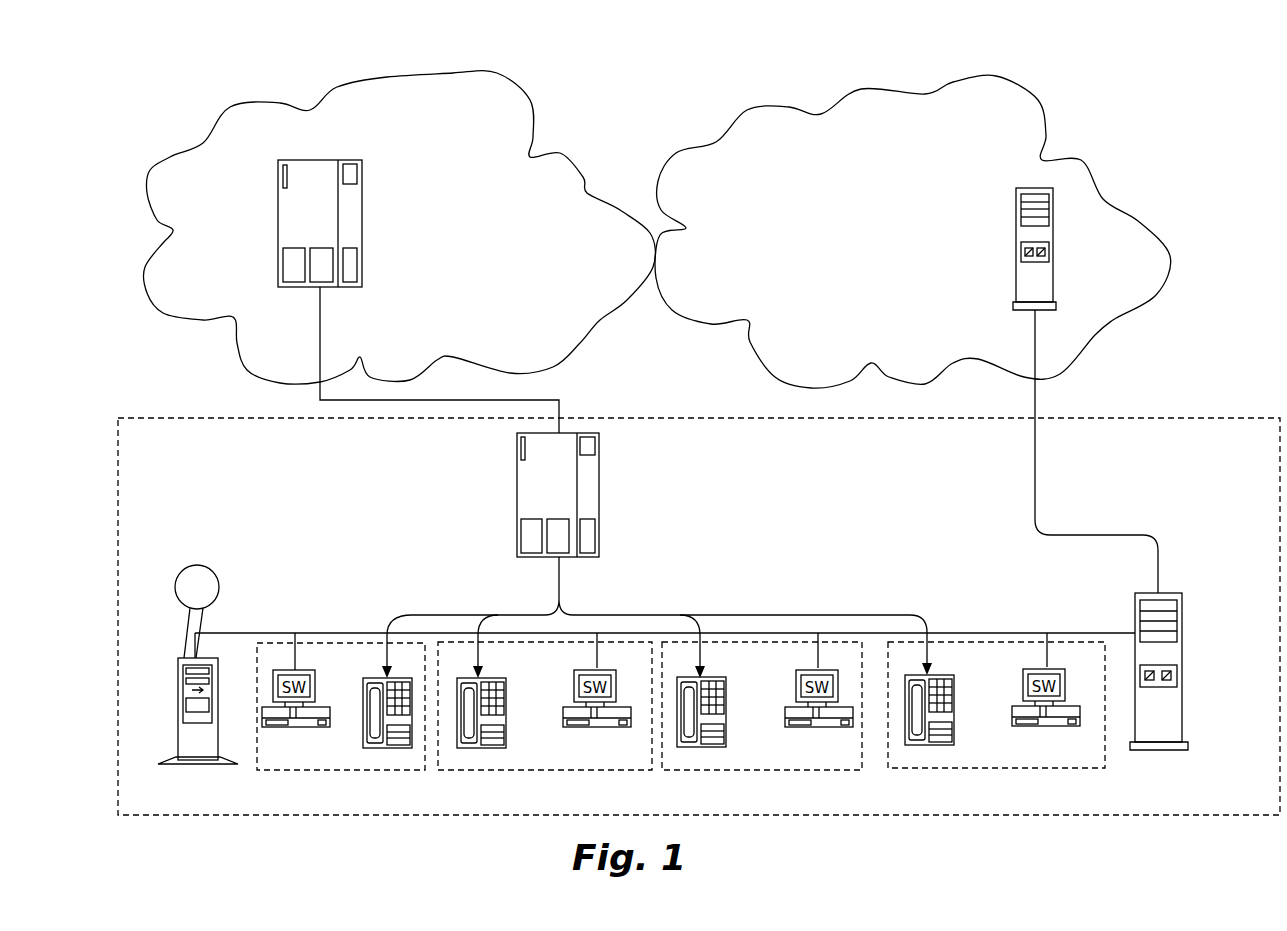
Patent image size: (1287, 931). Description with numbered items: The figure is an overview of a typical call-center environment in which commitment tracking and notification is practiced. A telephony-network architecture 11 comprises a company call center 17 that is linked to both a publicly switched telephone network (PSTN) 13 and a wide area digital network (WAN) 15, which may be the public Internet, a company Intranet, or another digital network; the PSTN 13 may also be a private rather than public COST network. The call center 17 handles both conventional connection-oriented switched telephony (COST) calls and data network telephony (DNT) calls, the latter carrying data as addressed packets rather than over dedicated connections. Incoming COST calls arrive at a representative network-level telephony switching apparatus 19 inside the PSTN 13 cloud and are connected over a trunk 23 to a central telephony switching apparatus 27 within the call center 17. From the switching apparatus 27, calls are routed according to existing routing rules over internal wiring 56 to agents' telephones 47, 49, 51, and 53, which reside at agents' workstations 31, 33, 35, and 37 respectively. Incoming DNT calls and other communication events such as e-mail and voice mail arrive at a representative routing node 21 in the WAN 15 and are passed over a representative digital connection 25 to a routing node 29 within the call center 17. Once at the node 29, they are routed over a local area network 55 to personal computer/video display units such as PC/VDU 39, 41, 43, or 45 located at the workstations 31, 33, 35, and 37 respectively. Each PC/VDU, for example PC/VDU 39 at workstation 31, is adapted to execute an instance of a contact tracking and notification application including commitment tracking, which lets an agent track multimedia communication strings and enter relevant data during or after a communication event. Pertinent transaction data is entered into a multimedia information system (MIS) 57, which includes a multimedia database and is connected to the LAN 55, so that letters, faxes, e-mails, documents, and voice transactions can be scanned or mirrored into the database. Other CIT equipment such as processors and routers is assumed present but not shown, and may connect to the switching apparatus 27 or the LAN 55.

The telephony-network architecture 11 is at (626, 100).
The publicly switched telephone network (PSTN) 13 is at (170, 157).
The wide area digital network (WAN) 15 is at (716, 142).
The company call center 17 is at (1139, 400).
The network-level telephony switching apparatus 19 is at (278, 238).
The routing node 21 is at (1017, 260).
The trunk 23 is at (320, 348).
The digital connection 25 is at (1034, 358).
The central telephony switching apparatus 27 is at (599, 512).
The routing node 29 is at (1182, 630).
The agent's workstation 31 is at (360, 770).
The agent's workstation 33 is at (558, 770).
The agent's workstation 35 is at (775, 770).
The agent's workstation 37 is at (1007, 768).
The personal computer/video display unit (PC/VDU) 39 is at (320, 728).
The personal computer/video display unit (PC/VDU) 41 is at (577, 727).
The personal computer/video display unit (PC/VDU) 43 is at (795, 727).
The personal computer/video display unit (PC/VDU) 45 is at (1024, 726).
The agent's telephone 47 is at (363, 710).
The agent's telephone 49 is at (506, 707).
The agent's telephone 51 is at (727, 713).
The agent's telephone 53 is at (955, 712).
The local area network (LAN) 55 is at (332, 632).
The internal wiring 56 is at (747, 615).
The multimedia information system (MIS) 57 is at (178, 710).